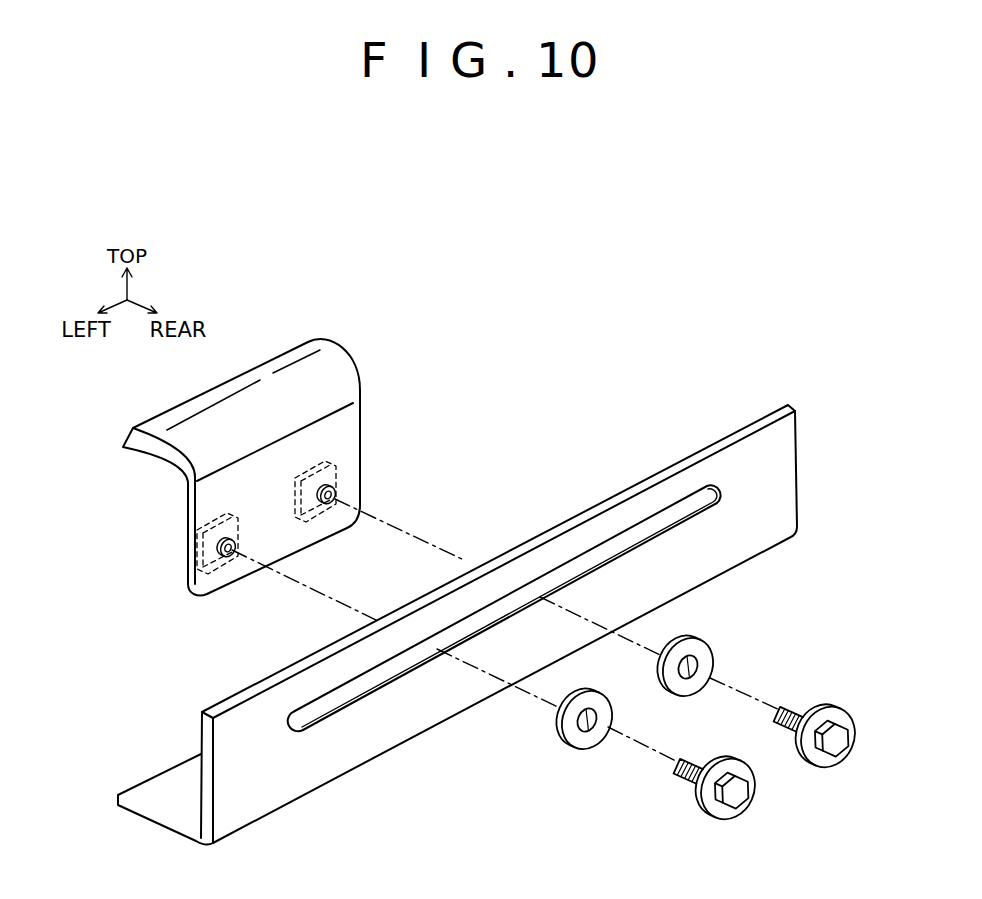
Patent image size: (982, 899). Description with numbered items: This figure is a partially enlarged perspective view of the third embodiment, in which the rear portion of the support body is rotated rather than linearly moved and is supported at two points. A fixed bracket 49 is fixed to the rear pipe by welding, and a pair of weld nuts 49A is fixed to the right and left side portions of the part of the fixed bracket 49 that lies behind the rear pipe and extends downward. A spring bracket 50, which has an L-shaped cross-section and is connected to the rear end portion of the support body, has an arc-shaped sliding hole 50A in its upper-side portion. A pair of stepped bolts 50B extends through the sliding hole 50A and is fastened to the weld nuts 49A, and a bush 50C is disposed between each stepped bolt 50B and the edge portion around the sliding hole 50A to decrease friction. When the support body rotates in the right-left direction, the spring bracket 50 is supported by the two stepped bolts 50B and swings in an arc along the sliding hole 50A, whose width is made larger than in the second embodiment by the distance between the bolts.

The fixed bracket 49 is at (337, 372).
The weld nuts 49A is at (210, 518).
The spring bracket 50 is at (745, 450).
The sliding hole 50A is at (383, 697).
The stepped bolts 50B is at (822, 767).
The bush 50C is at (713, 650).